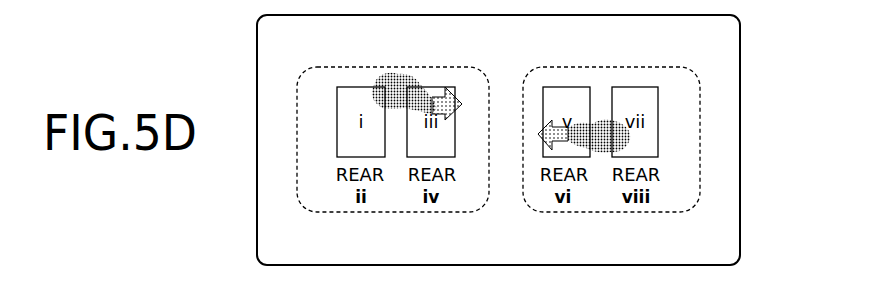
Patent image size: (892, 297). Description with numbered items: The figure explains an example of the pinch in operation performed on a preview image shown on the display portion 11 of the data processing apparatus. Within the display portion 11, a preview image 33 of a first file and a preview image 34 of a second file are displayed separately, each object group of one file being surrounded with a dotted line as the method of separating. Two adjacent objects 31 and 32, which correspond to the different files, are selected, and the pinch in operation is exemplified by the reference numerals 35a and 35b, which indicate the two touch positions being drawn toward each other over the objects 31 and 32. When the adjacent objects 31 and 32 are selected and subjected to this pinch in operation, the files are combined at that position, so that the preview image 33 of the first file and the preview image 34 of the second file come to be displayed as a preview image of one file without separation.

The display portion 11 is at (742, 88).
The object 31 is at (440, 84).
The object 32 is at (568, 86).
The preview image of a first file 33 is at (340, 64).
The preview image of a second file 34 is at (666, 66).
The pinch in operation state 35a is at (388, 76).
The pinch in operation state 35b is at (600, 156).